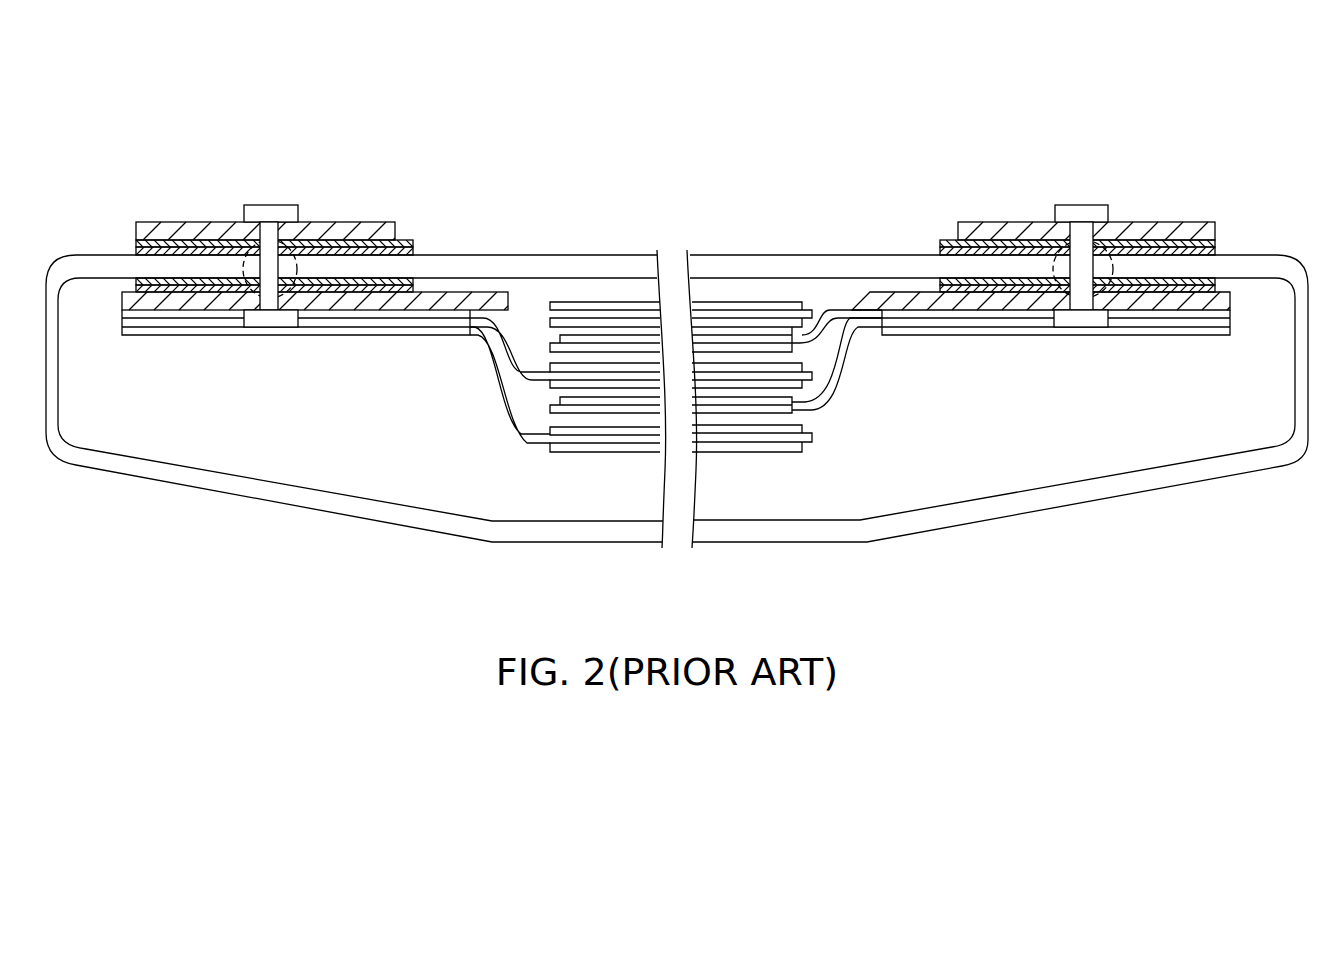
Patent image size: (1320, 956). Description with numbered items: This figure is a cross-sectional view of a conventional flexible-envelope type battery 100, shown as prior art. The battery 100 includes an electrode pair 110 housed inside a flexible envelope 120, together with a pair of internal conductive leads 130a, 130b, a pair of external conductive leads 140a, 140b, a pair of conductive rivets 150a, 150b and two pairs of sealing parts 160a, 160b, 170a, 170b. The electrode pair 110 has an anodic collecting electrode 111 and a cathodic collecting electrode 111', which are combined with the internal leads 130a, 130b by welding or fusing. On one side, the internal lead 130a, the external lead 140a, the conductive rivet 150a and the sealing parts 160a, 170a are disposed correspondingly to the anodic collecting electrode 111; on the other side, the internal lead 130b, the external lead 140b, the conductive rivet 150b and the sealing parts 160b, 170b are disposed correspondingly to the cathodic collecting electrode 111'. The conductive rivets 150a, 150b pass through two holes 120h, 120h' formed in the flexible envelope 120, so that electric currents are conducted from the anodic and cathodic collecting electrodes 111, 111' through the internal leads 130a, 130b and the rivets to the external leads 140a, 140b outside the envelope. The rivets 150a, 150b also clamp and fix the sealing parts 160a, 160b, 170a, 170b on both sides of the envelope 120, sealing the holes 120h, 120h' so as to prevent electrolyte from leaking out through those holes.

The flexible-envelope battery 100 is at (77, 97).
The electrode pair 110 is at (806, 441).
The anodic collecting electrode 111 is at (1056, 440).
The cathodic collecting electrode 111' is at (296, 439).
The flexible envelope 120 is at (751, 262).
The hole 120h is at (1128, 207).
The hole 120h' is at (226, 207).
The internal conductive lead 130a is at (1224, 295).
The internal conductive lead 130b is at (132, 295).
The external conductive lead 140a is at (1208, 222).
The external conductive lead 140b is at (147, 222).
The conductive rivet 150a is at (1078, 205).
The conductive rivet 150b is at (270, 205).
The sealing part 160a is at (943, 240).
The sealing part 160b is at (412, 240).
The sealing part 170a is at (1005, 240).
The sealing part 170b is at (323, 242).